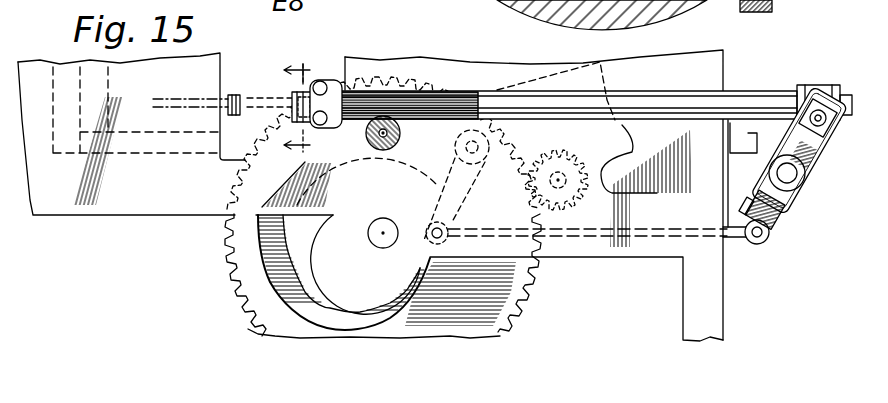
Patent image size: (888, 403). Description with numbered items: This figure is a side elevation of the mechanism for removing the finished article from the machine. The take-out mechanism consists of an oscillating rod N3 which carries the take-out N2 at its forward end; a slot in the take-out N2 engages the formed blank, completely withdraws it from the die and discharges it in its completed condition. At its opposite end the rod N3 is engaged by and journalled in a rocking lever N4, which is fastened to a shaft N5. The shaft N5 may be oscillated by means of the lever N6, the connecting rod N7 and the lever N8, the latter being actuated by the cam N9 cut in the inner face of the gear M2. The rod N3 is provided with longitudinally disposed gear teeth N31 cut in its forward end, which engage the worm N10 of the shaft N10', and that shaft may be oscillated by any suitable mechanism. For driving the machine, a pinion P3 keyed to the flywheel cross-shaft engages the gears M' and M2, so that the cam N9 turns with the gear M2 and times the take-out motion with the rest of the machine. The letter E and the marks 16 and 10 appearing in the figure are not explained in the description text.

The shaft end E is at (293, 90).
The direction arrow 16 is at (295, 63).
The direction arrow 10 is at (291, 136).
The take-out N2 is at (320, 83).
The oscillating rod N3 is at (700, 100).
The gear teeth N31 is at (343, 173).
The worm N10 is at (372, 157).
The shaft N10' is at (517, 75).
The lever N8 is at (468, 197).
The cam N9 is at (423, 287).
The rocking lever N4 is at (822, 140).
The shaft N5 is at (800, 182).
The lever N6 is at (775, 222).
The connecting rod N7 is at (737, 242).
The gear M' is at (551, 195).
The gear M2 is at (248, 268).
The pinion P3 is at (583, 195).